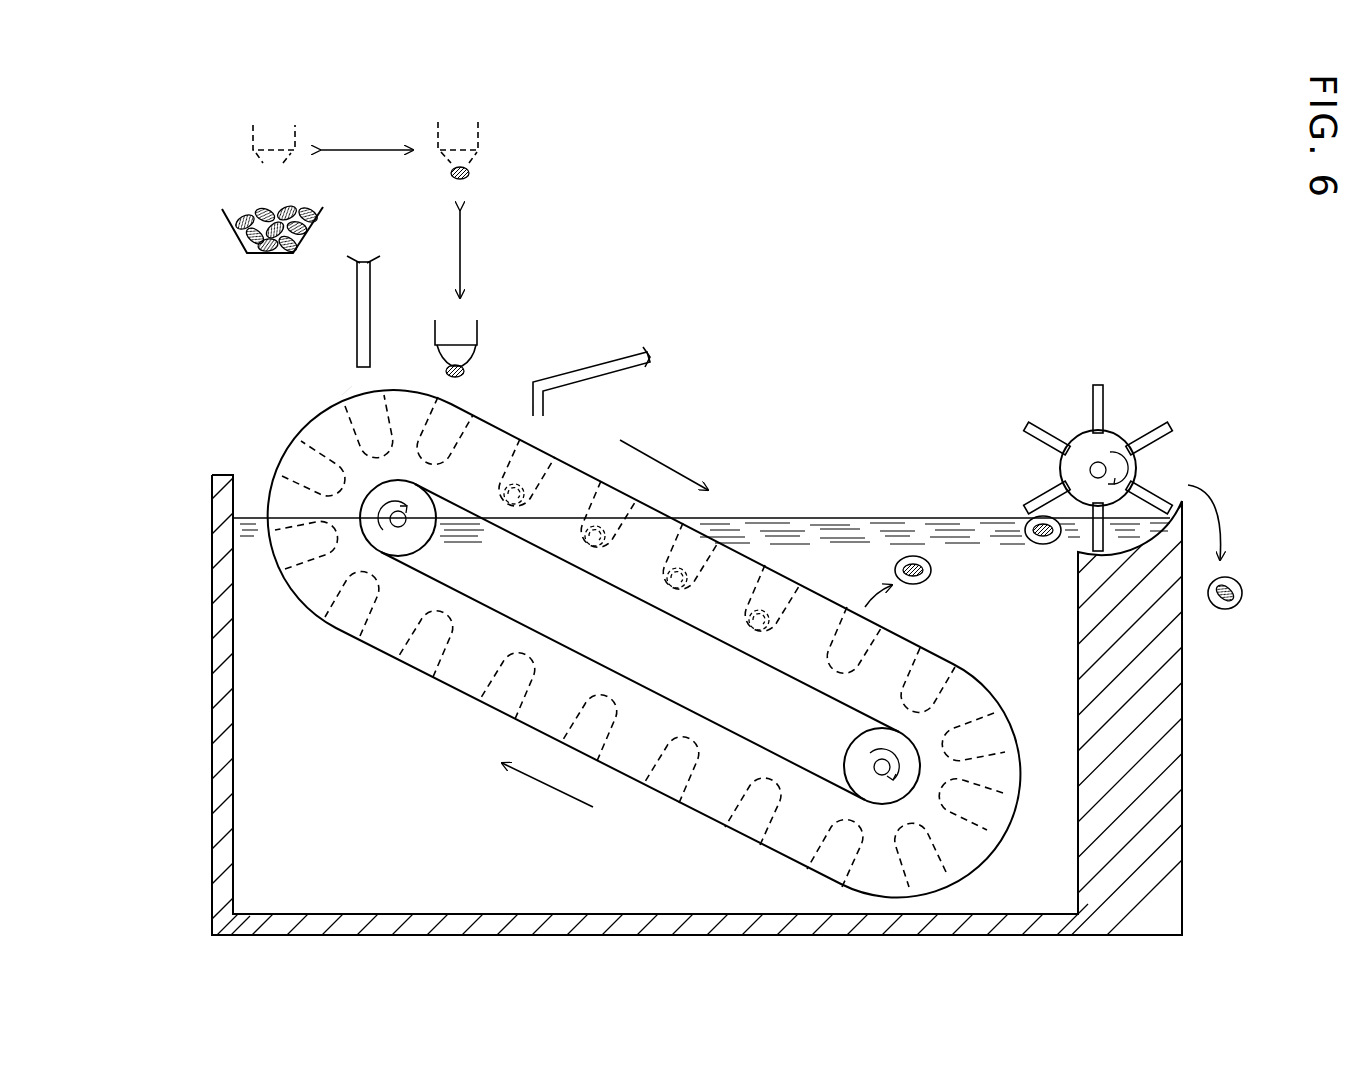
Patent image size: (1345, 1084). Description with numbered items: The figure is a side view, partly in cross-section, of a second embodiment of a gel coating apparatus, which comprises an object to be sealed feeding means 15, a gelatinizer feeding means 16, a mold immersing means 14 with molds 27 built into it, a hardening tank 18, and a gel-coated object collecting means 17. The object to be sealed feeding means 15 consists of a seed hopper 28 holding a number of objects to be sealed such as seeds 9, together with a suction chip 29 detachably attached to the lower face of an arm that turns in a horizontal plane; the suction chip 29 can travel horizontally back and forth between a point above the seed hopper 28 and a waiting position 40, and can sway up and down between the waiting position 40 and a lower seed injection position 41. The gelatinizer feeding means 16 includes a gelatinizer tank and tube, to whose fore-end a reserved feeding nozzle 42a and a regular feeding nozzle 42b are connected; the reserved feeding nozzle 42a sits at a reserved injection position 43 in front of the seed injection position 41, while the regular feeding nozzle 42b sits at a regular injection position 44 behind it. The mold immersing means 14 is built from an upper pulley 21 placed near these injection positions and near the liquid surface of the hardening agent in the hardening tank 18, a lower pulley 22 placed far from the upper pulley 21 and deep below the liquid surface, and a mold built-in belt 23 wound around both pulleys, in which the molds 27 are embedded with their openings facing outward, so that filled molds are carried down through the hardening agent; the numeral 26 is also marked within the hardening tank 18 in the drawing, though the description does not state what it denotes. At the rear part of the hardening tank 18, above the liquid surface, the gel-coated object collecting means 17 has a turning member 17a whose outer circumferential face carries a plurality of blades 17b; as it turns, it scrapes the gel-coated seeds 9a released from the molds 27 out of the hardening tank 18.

The seeds 9 is at (238, 210).
The gel-coated seeds 9a is at (1227, 610).
The mold immersing means 14 is at (607, 625).
The object to be sealed feeding means 15 is at (396, 210).
The gelatinizer feeding means 16 is at (676, 302).
The gel-coated object collecting means 17 is at (1110, 412).
The turning member 17a is at (1084, 444).
The blades 17b is at (1156, 432).
The hardening tank 18 is at (222, 772).
The upper pulley 21 is at (425, 540).
The lower pulley 22 is at (858, 760).
The mold built-in belt 23 is at (738, 562).
The treatment liquid 26 is at (357, 790).
The molds 27 is at (537, 453).
The seed hopper 28 is at (249, 234).
The suction chip 29 is at (252, 143).
The waiting position 40 is at (488, 181).
The seed injection position 41 is at (442, 383).
The reserved feeding nozzle 42a is at (357, 300).
The regular feeding nozzle 42b is at (607, 374).
The reserved injection position 43 is at (352, 386).
The regular injection position 44 is at (520, 402).